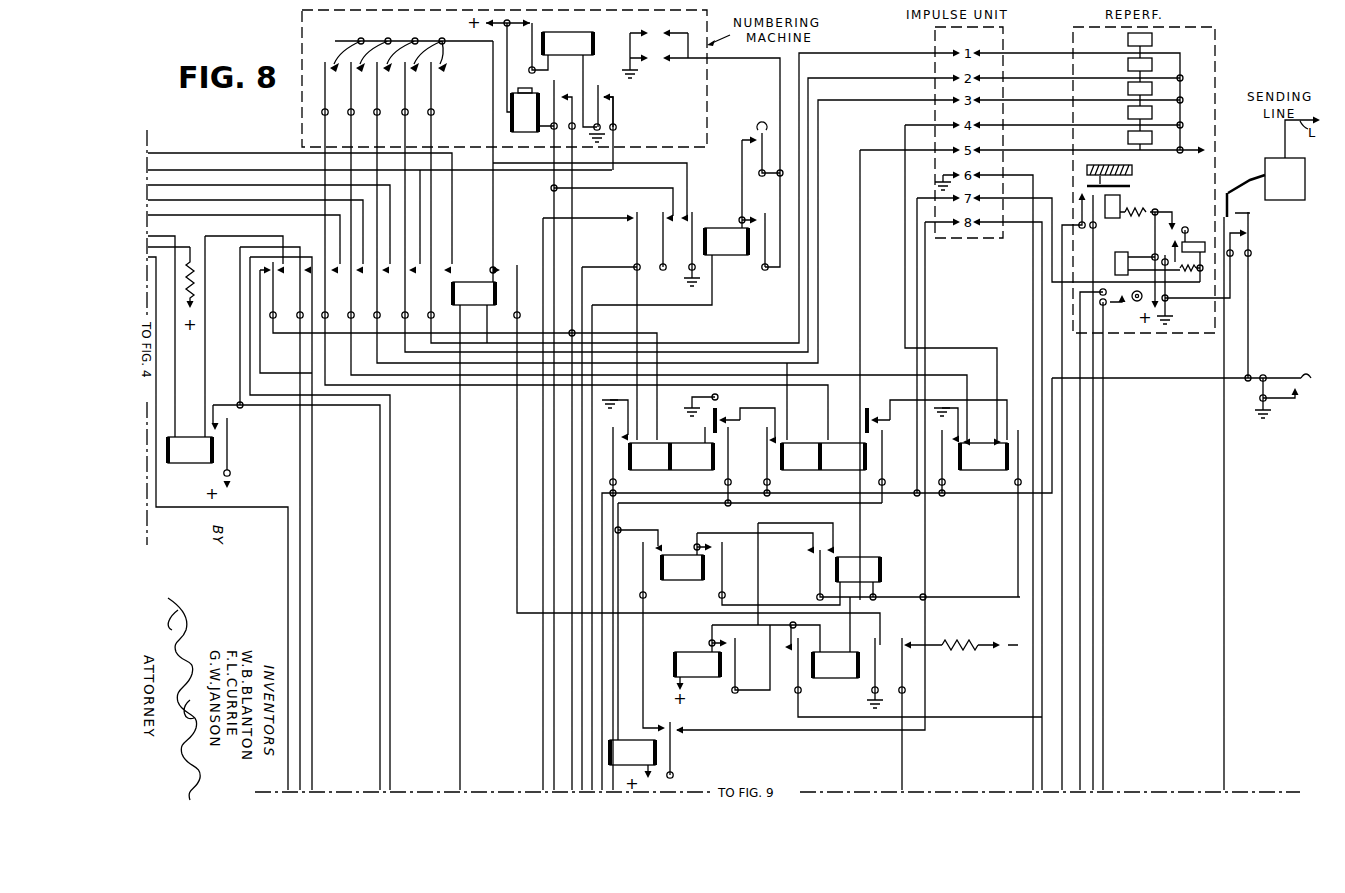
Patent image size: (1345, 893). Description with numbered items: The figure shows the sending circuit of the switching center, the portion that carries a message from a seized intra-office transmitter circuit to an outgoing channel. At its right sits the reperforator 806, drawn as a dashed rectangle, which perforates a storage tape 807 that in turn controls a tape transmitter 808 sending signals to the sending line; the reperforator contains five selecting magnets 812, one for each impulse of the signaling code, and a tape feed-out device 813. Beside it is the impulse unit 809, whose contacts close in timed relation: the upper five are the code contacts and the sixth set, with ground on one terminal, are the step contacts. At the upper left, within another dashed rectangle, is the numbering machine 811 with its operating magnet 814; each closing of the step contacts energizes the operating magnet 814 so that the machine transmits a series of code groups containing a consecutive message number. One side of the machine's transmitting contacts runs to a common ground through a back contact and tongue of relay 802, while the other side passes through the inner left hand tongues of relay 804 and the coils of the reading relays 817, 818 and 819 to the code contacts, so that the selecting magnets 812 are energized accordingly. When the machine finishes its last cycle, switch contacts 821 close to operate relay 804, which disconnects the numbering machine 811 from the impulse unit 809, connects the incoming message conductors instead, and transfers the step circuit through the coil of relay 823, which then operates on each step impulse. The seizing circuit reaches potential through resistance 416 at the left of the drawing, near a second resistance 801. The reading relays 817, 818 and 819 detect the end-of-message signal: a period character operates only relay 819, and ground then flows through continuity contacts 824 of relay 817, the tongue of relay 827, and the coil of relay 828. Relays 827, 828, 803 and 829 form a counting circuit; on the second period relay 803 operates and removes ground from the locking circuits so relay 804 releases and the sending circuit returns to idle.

The resistance 416 is at (415, 41).
The resistor 801 is at (193, 294).
The relay 802 is at (732, 255).
The relay 803 is at (835, 678).
The relay 804 is at (492, 305).
The reperforator 806 is at (1215, 48).
The storage tape 807 is at (1232, 188).
The tape transmitter 808 is at (1290, 200).
The impulse unit 809 is at (935, 44).
The numbering machine 811 is at (707, 88).
The selecting magnets 812 is at (1128, 136).
The tape feed-out device 813 is at (1133, 198).
The operating magnet 814 is at (512, 110).
The relay 817 is at (688, 470).
The relay 818 is at (845, 470).
The relay 819 is at (992, 470).
The switch contacts 821 is at (614, 108).
The relay 823 is at (200, 463).
The continuity contacts 824 is at (718, 406).
The relay 827 is at (847, 557).
The relay 828 is at (683, 555).
The relay 829 is at (698, 652).